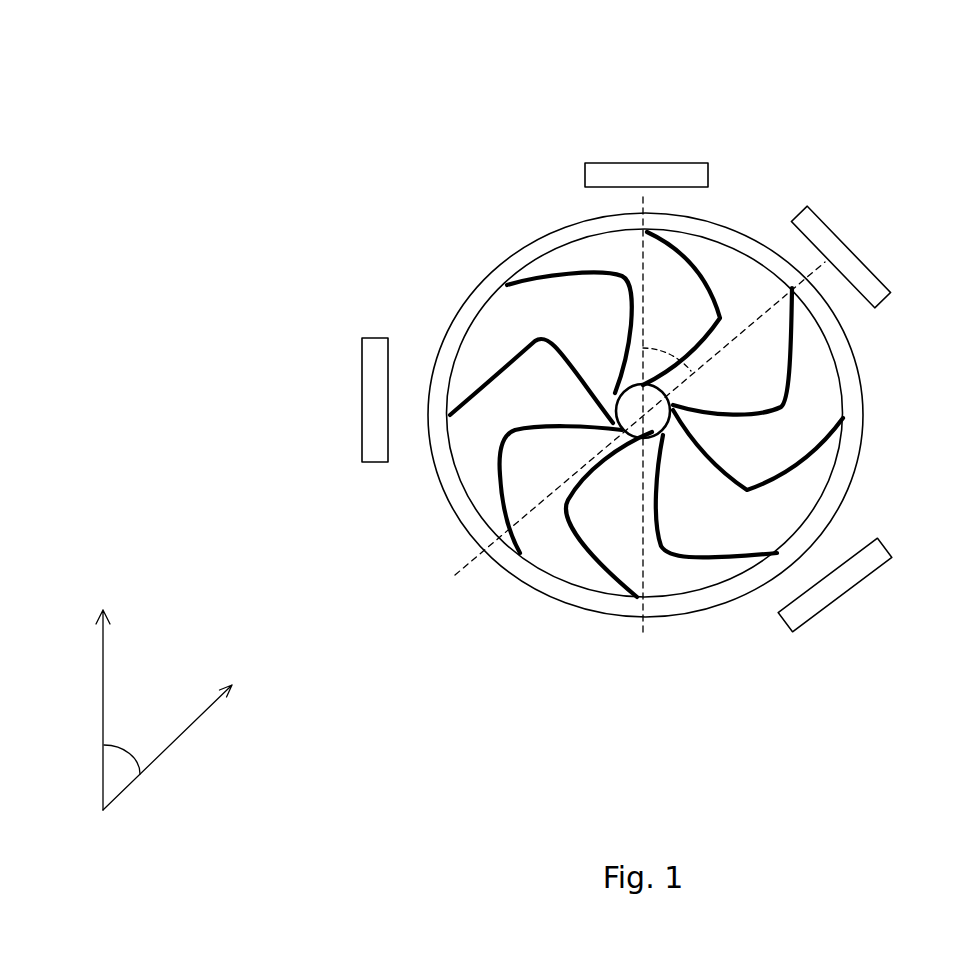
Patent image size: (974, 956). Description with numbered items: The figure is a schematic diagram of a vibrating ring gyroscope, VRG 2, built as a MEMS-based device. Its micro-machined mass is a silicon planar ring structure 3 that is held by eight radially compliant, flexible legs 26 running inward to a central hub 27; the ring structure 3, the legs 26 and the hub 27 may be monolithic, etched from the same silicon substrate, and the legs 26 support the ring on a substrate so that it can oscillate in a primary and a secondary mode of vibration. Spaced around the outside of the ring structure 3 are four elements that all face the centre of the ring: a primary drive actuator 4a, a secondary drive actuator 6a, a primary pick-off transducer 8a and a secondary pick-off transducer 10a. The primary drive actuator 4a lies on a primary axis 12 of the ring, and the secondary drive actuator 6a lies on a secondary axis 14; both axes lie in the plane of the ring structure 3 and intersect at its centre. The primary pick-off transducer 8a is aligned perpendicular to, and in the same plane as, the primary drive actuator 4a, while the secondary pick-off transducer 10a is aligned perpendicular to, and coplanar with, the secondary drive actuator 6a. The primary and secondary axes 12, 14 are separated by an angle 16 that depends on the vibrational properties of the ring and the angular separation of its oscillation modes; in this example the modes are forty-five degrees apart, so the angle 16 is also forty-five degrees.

The vibrating ring gyroscope 2 is at (227, 88).
The ring structure 3 is at (748, 233).
The primary drive actuator 4a is at (658, 162).
The secondary drive actuator 6a is at (864, 263).
The primary pick-off transducer 8a is at (360, 402).
The secondary pick-off transducer 10a is at (862, 588).
The primary axis 12 is at (643, 330).
The secondary axis 14 is at (727, 347).
The angle 16 is at (392, 304).
The flexible legs 26 is at (507, 437).
The central hub 27 is at (629, 425).